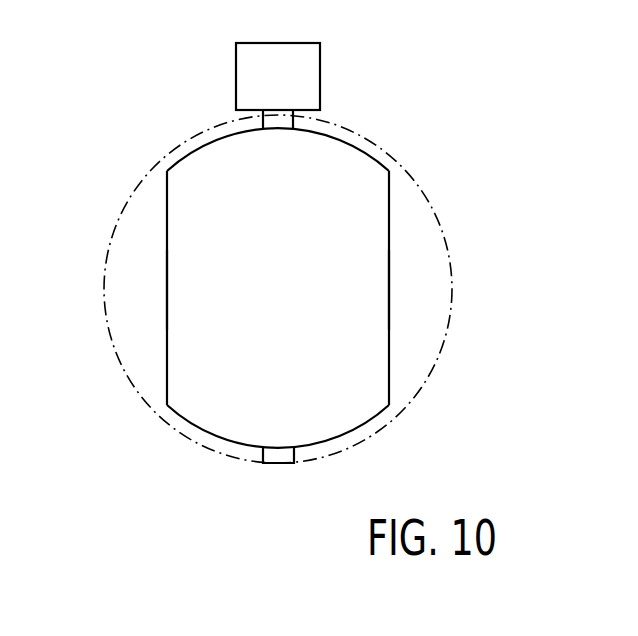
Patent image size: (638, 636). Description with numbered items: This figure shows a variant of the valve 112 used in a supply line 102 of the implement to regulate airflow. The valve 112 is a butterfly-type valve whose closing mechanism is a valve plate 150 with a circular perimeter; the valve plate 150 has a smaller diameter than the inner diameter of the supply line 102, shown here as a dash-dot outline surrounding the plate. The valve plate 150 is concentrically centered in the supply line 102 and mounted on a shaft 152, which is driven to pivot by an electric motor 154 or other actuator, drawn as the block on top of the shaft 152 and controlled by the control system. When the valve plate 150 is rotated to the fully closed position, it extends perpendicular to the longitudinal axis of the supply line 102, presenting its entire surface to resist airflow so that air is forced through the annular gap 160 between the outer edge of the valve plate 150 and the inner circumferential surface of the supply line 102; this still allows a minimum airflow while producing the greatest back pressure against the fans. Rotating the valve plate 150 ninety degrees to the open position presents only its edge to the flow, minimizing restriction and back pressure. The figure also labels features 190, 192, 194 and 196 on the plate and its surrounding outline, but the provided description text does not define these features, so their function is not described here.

The supply line 102 is at (153, 160).
The valve 112 is at (581, 38).
The valve plate 150 is at (365, 230).
The shaft 152 is at (278, 118).
The electric motor 154 is at (278, 43).
The annular gap 160 is at (138, 230).
The upper envelope portion 190 is at (353, 137).
The bottom stub 192 is at (347, 433).
The left side wall 194 is at (167, 287).
The right side wall 196 is at (389, 287).